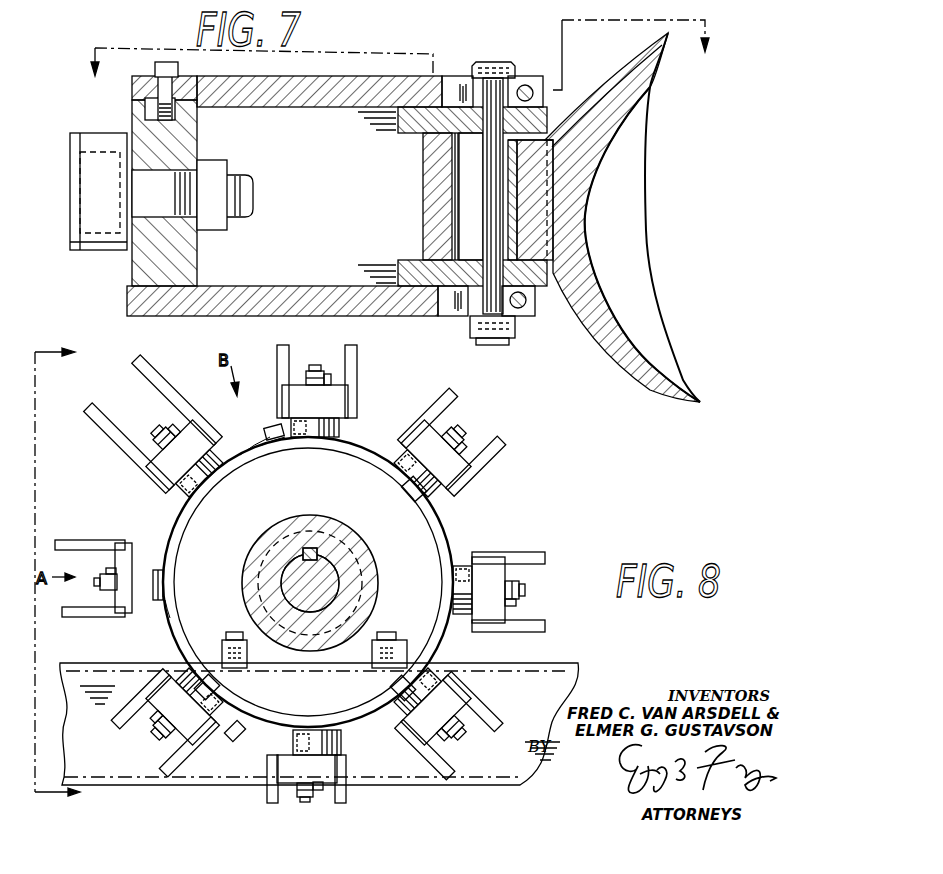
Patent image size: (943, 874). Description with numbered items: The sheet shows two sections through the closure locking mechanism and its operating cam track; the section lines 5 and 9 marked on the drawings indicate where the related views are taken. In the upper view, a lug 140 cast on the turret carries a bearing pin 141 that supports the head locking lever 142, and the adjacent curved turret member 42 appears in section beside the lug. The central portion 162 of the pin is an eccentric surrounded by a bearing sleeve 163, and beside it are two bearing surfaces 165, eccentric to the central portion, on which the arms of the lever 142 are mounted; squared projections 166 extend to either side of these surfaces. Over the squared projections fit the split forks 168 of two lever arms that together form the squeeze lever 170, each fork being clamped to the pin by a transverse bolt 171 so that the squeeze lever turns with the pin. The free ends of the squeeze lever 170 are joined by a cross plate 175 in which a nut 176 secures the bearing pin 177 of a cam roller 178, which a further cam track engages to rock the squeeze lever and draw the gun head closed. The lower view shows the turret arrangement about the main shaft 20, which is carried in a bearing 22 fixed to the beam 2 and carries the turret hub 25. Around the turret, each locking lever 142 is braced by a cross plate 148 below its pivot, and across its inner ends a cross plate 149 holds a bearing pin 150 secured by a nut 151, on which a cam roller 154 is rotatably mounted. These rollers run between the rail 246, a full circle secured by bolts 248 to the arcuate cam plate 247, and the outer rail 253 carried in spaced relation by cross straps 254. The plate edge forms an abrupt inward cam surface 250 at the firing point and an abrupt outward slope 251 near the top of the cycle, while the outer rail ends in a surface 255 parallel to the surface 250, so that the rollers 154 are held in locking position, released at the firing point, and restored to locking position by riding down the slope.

In FIG. 7, the section line 5- 5 is at (396, 67).
In FIG. 8, the section line 9- 9 is at (67, 580).
In FIG. 8, the beam 2 is at (540, 678).
In FIG. 8, the main shaft 20 is at (318, 560).
In FIG. 8, the bearing 22 is at (350, 588).
In FIG. 8, the hub 25 is at (335, 530).
In FIG. 7, the blade mounting body 42 is at (648, 378).
In FIG. 7, the lug 140 is at (425, 178).
In FIG. 7, the bearing pin 141 is at (490, 62).
In FIG. 7, the head locking lever 142 is at (392, 133).
In FIG. 8, the head locking lever 142 is at (287, 352).
In FIG. 8, the cross plate 148 is at (143, 390).
In FIG. 8, the cross plate 149 is at (347, 400).
In FIG. 8, the bearing pin 150 is at (315, 372).
In FIG. 8, the nut 151 is at (332, 383).
In FIG. 8, the cam roller 154 is at (339, 427).
In FIG. 7, the central portion 162 is at (468, 240).
In FIG. 7, the bearing sleeve 163 is at (453, 208).
In FIG. 7, the bearing surfaces 165 is at (485, 140).
In FIG. 7, the squared projections 166 is at (465, 97).
In FIG. 7, the split forks 168 is at (522, 80).
In FIG. 7, the squeeze lever 170 is at (305, 107).
In FIG. 7, the transverse bolt 171 is at (533, 95).
In FIG. 7, the cross plate 175 is at (197, 253).
In FIG. 7, the nut 176 is at (225, 168).
In FIG. 7, the bearing pin 177 is at (255, 187).
In FIG. 7, the cam roller 178 is at (102, 255).
In FIG. 8, the rail 246 is at (180, 540).
In FIG. 8, the cam plate 247 is at (250, 438).
In FIG. 8, the bolts 248 is at (270, 424).
In FIG. 8, the inward cam surface 250 is at (152, 606).
In FIG. 8, the outward slope 251 is at (272, 444).
In FIG. 8, the outer rail 253 is at (453, 548).
In FIG. 8, the cross straps 254 is at (416, 498).
In FIG. 8, the surface 255 is at (166, 590).